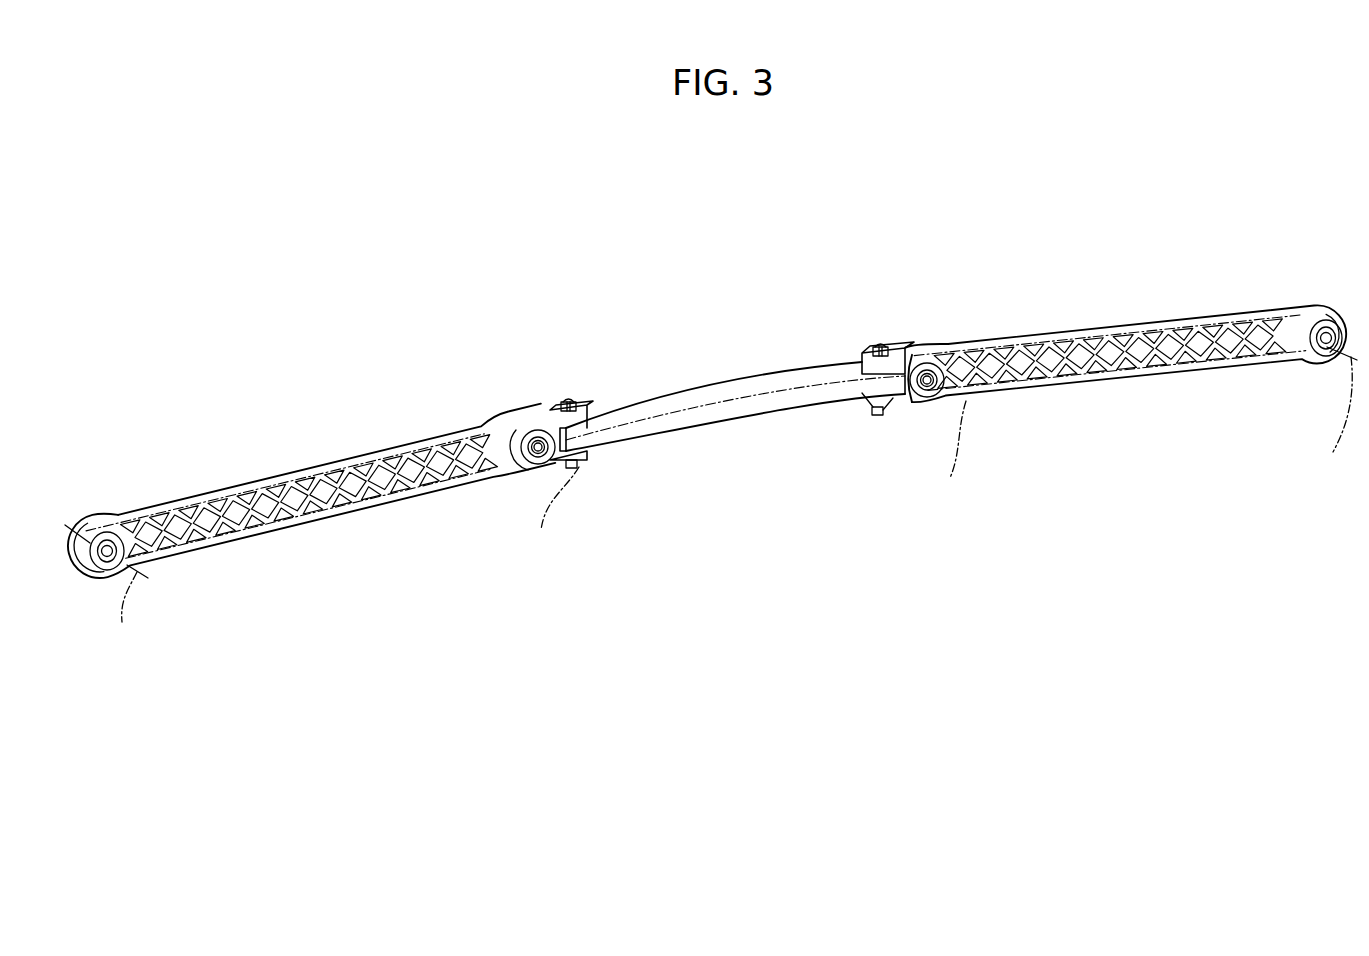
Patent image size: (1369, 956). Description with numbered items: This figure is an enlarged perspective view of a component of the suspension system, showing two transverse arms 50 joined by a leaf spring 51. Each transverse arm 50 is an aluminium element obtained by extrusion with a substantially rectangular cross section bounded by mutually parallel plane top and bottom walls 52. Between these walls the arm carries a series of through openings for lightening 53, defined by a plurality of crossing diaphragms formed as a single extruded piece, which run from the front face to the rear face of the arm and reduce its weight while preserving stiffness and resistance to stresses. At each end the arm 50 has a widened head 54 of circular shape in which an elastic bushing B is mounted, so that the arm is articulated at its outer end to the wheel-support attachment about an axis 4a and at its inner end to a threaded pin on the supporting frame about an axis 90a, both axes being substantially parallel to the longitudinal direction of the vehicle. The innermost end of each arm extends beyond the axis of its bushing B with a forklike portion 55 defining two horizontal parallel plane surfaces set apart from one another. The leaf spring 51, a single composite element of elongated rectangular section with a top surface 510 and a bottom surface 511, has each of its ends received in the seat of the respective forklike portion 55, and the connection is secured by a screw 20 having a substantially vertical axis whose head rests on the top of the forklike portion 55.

The transverse arm 50 is at (346, 517).
The leaf spring 51 is at (691, 430).
The top surface 510 is at (742, 384).
The bottom surface 511 is at (786, 407).
The top and bottom walls 52 is at (193, 506).
The through openings for lightening 53 is at (350, 480).
The widened head 54 is at (88, 517).
The forklike portion 55 is at (582, 420).
The screw 20 is at (567, 398).
The elastic bushing B is at (116, 540).
The axis 90a is at (754, 484).
The axis 4a is at (711, 498).